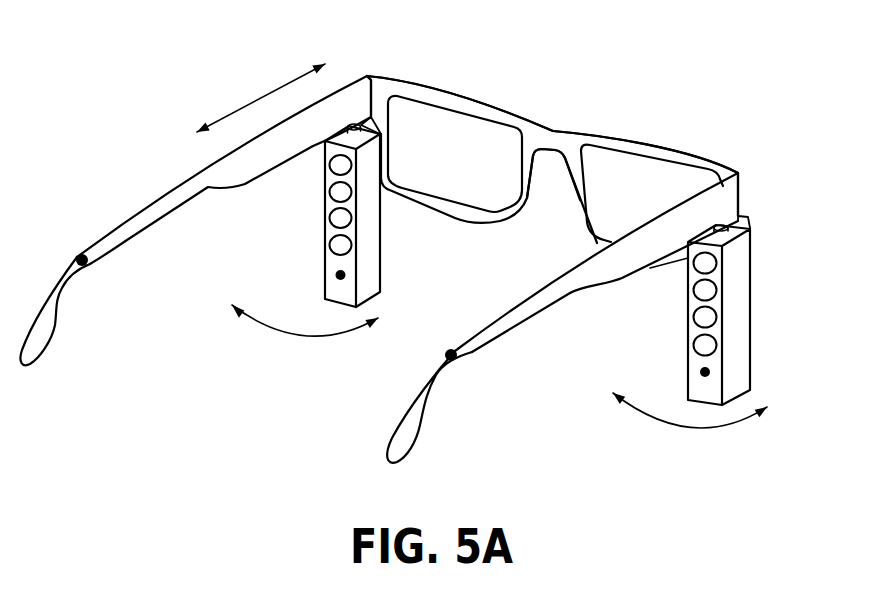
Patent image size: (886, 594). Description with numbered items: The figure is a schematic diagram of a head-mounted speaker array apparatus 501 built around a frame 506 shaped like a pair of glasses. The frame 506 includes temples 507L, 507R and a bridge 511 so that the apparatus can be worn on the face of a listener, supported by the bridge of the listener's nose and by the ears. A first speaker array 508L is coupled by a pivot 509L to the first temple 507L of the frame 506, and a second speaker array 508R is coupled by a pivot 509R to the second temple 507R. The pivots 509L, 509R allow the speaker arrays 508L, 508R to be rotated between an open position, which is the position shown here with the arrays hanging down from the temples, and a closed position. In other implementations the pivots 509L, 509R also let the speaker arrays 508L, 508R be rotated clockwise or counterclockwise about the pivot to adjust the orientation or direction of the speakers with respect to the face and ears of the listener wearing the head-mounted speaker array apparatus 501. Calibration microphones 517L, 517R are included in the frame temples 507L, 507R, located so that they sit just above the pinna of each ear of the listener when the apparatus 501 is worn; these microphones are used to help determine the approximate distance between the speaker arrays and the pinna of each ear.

The head-mounted speaker array apparatus 501 is at (533, 55).
The frame 506 is at (635, 138).
The bridge 511 is at (555, 143).
The first temple 507L is at (133, 233).
The second temple 507R is at (483, 347).
The calibration microphone 517L is at (82, 252).
The calibration microphone 517R is at (450, 347).
The pivot 509L is at (380, 132).
The pivot 509R is at (746, 222).
The first speaker array 508L is at (323, 291).
The second speaker array 508R is at (738, 374).